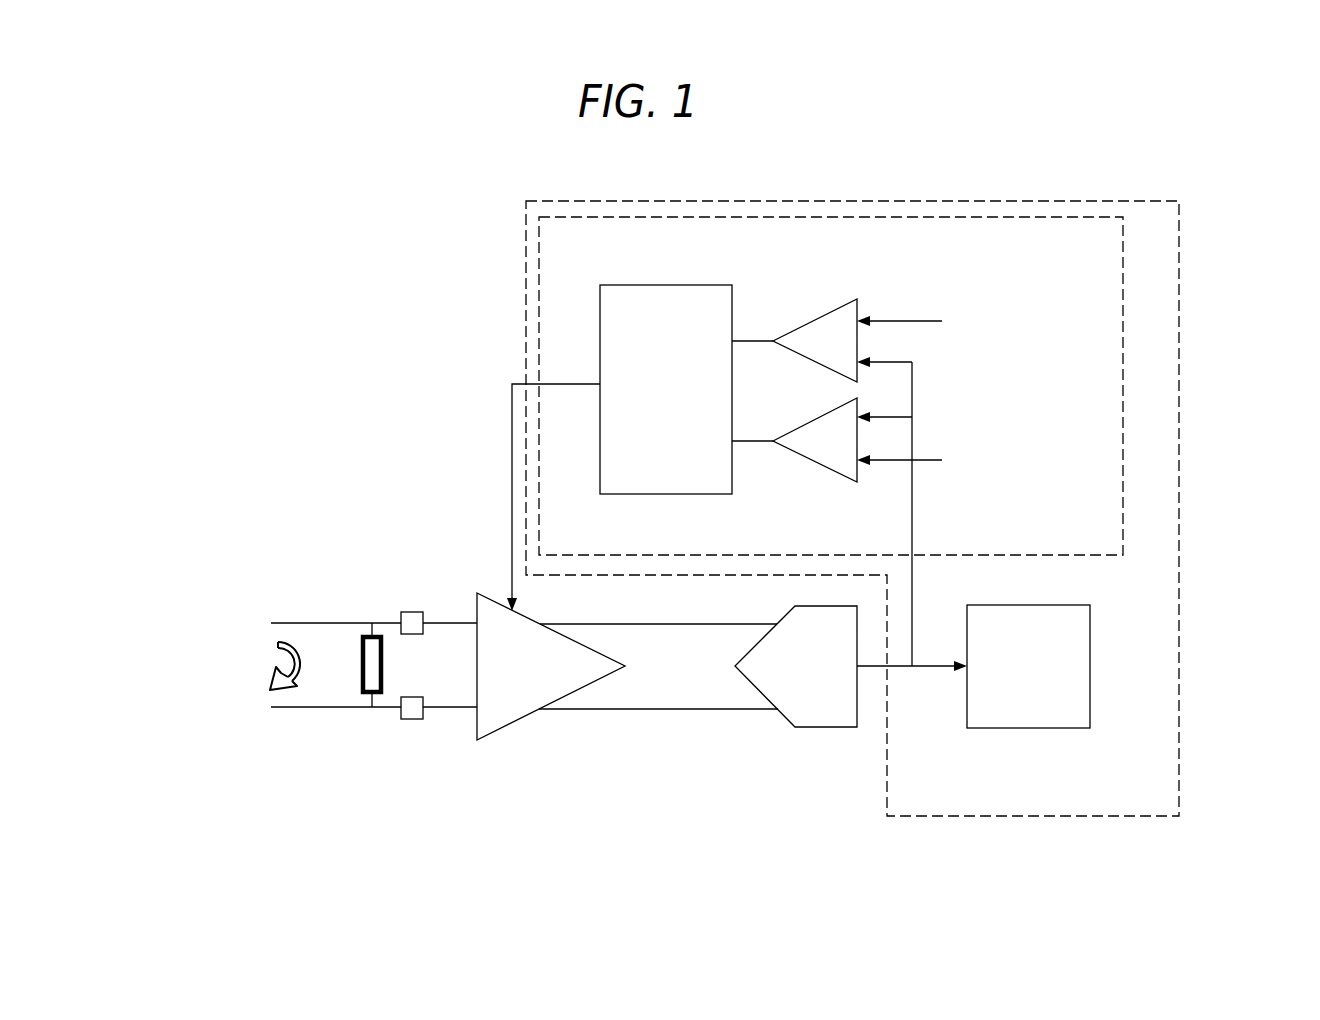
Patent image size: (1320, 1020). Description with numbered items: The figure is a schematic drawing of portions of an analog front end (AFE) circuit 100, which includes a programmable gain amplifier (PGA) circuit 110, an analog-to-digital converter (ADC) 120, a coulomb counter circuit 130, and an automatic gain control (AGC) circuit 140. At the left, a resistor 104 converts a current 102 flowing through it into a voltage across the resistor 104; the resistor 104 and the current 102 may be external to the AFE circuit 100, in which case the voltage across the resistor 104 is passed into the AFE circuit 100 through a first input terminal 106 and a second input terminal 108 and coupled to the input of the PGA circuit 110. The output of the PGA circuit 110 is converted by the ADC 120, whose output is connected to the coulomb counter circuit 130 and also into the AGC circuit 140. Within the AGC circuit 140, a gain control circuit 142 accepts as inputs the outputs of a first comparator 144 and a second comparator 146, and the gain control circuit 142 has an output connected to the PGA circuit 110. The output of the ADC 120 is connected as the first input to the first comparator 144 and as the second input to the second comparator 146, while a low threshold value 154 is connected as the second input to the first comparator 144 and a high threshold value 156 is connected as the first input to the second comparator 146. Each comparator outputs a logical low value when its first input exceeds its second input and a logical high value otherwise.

The analog front end (AFE) circuit 100 is at (1149, 130).
The current 102 is at (233, 628).
The resistor 104 is at (360, 667).
The first input terminal 106 is at (400, 612).
The second input terminal 108 is at (422, 717).
The programmable gain amplifier (PGA) circuit 110 is at (510, 727).
The analog-to-digital converter (ADC) 120 is at (783, 720).
The coulomb counter circuit 130 is at (967, 713).
The automatic gain control (AGC) circuit 140 is at (1123, 285).
The gain control circuit 142 is at (600, 478).
The first comparator 144 is at (813, 462).
The second comparator 146 is at (793, 331).
The low threshold value 154 is at (895, 460).
The high threshold value 156 is at (933, 320).